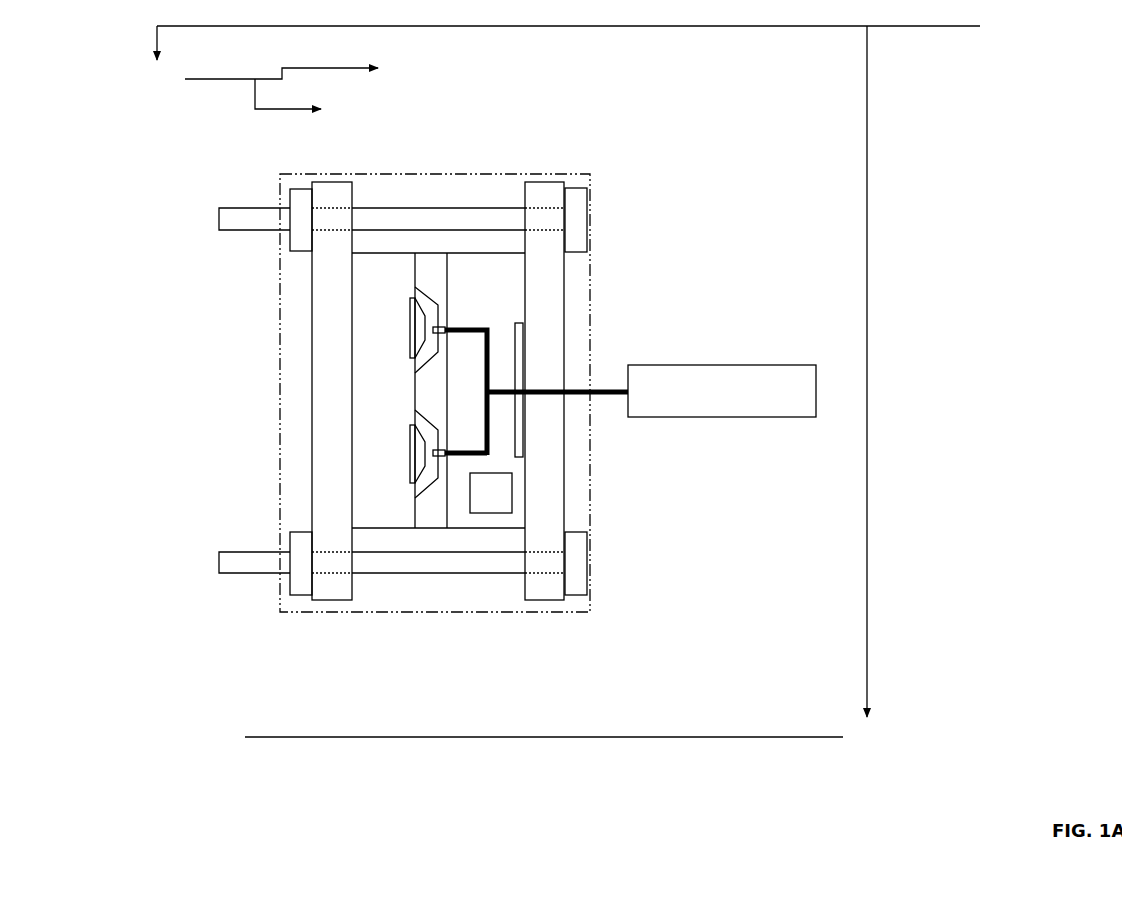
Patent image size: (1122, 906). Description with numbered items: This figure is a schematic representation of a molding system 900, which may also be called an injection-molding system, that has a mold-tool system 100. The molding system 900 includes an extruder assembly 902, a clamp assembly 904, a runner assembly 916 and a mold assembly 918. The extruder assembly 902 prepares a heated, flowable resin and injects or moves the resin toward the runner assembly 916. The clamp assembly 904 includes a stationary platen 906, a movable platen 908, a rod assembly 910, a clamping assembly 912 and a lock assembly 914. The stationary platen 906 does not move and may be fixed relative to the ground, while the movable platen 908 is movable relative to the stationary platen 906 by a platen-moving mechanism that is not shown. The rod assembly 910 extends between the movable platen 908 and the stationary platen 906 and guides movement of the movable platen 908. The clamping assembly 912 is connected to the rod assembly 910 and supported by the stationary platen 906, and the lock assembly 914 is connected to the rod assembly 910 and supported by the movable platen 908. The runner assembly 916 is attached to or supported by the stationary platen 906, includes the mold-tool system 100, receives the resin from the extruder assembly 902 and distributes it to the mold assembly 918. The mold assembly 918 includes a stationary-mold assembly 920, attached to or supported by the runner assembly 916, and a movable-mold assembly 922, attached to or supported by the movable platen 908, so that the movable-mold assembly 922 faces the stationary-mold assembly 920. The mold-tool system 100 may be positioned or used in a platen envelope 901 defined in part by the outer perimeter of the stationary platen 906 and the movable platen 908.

The molding system 900 is at (590, 26).
The platen envelope 901 is at (280, 393).
The extruder assembly 902 is at (741, 26).
The clamp assembly 904 is at (565, 387).
The stationary platen 906 is at (540, 600).
The movable platen 908 is at (330, 600).
The rod assembly 910 is at (398, 575).
The clamping assembly 912 is at (578, 597).
The lock assembly 914 is at (300, 597).
The runner assembly 916 is at (484, 253).
The mold assembly 918 is at (260, 67).
The stationary-mold assembly 920 is at (433, 253).
The movable-mold assembly 922 is at (398, 253).
The mold-tool system 100 is at (512, 490).